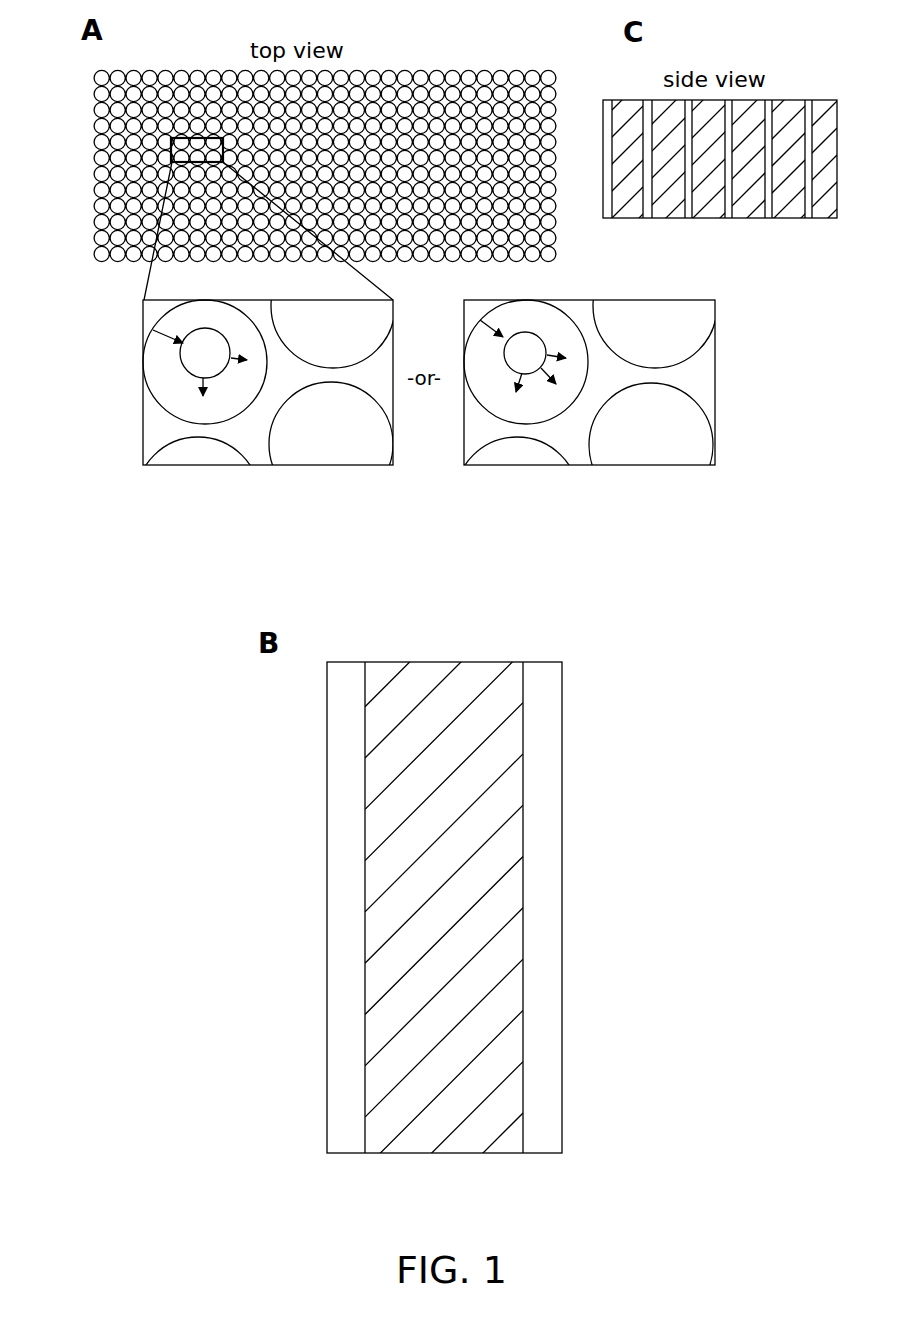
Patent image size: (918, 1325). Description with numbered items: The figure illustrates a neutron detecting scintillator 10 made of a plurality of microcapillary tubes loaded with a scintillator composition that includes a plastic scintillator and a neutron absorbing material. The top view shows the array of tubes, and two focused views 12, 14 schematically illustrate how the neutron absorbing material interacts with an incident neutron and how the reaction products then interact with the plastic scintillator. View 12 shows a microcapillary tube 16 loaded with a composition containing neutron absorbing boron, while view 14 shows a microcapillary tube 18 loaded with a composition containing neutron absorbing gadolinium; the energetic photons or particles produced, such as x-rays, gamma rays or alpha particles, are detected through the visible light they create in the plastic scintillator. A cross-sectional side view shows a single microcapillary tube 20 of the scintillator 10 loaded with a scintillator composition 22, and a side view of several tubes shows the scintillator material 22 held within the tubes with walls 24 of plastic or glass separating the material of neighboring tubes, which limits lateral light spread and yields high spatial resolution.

In FIG. 1A, the neutron detecting scintillator 10 is at (93, 197).
In FIG. 1A, the focused view 12 is at (240, 402).
In FIG. 1A, the focused view 14 is at (586, 402).
In FIG. 1A, the microcapillary tube 16 is at (150, 370).
In FIG. 1A, the microcapillary tube 18 is at (543, 318).
In FIG. 1B, the microcapillary tube 20 is at (538, 737).
In FIG. 1C, the scintillator composition 22 is at (707, 174).
In FIG. 1B, the scintillator composition 22 is at (382, 825).
In FIG. 1C, the walls 24 is at (645, 187).